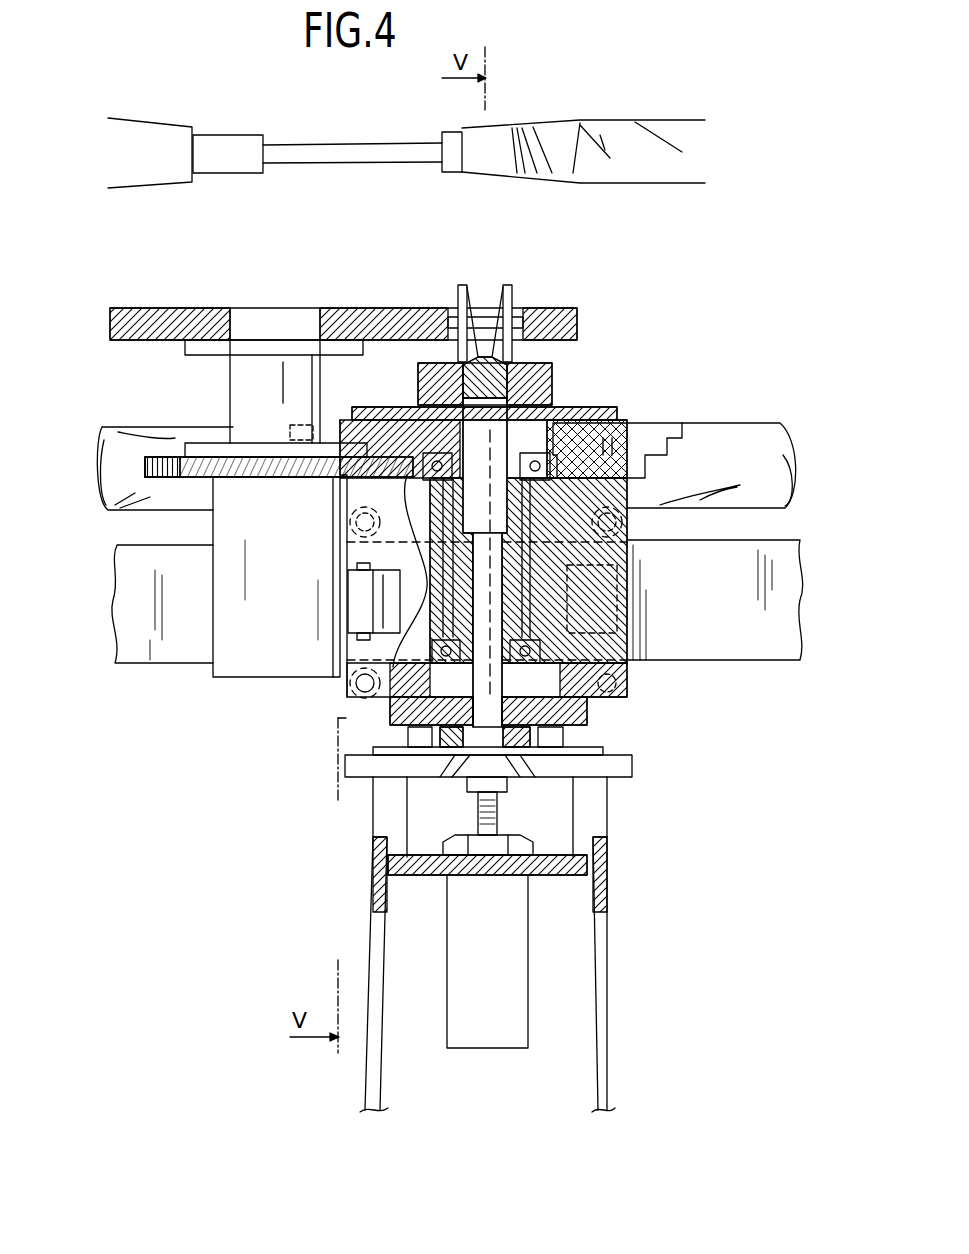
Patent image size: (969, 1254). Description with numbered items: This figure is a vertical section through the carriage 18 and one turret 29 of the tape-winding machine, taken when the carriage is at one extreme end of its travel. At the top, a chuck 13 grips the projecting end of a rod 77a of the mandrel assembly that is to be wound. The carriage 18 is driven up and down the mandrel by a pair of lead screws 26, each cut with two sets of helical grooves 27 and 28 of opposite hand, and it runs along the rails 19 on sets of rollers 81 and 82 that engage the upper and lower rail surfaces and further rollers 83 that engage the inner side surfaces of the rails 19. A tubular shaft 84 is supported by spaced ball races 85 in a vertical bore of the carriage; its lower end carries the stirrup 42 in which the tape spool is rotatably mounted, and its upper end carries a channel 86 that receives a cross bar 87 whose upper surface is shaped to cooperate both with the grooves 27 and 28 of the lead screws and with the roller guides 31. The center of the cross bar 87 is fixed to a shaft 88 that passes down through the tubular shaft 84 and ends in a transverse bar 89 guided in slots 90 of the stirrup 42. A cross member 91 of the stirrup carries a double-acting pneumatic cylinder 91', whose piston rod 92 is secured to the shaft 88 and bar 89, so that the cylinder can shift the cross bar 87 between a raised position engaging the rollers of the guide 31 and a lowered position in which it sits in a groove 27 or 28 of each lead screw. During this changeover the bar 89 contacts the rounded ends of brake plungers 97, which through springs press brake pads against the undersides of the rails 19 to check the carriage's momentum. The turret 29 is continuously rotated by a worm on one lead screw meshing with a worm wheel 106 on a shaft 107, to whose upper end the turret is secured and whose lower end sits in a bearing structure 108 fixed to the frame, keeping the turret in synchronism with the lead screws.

The chuck 13 is at (178, 140).
The rod 77a is at (307, 155).
The turret 29 is at (173, 317).
The shaft 107 is at (268, 322).
The worm wheel 106 is at (191, 458).
The bearing structure 108 is at (232, 523).
The lead screw 26 is at (160, 437).
The helical groove 28 is at (150, 433).
The helical groove 27 is at (133, 510).
The rail 19 is at (730, 638).
The carriage 18 is at (607, 490).
The tubular shaft 84 is at (510, 605).
The roller 83 is at (355, 593).
The roller 81 is at (628, 518).
The roller 82 is at (628, 673).
The shaft 88 is at (487, 430).
The channel 86 is at (537, 378).
The cross bar 87 is at (476, 355).
The roller guide 31 is at (465, 285).
The ball race 85 is at (540, 462).
The brake plunger 97 is at (548, 757).
The transverse bar 89 is at (623, 768).
The piston rod 92 is at (497, 813).
The slot 90 is at (607, 818).
The stirrup 42 is at (607, 882).
The cross member 91 is at (487, 883).
The double-acting pneumatic cylinder 91' is at (512, 961).